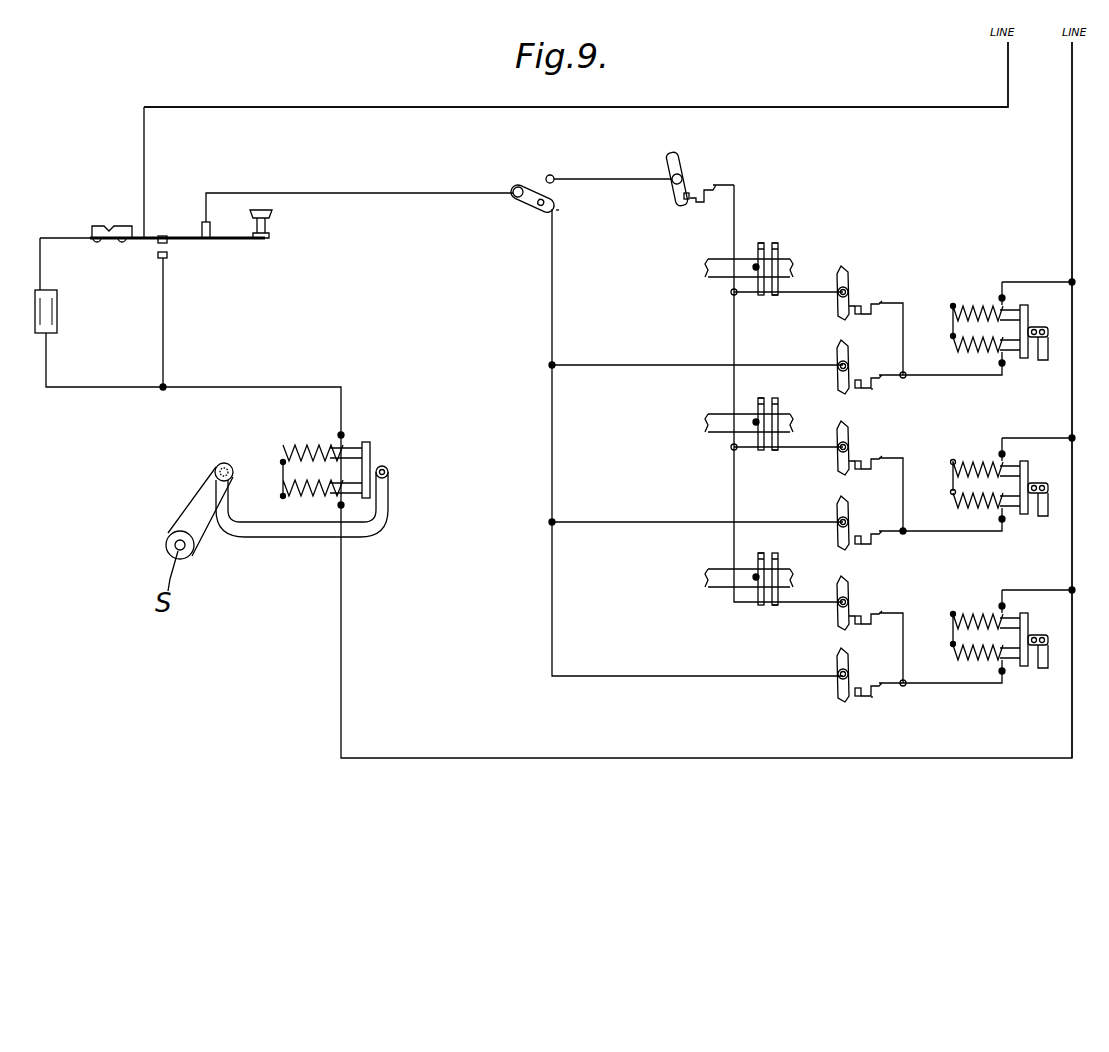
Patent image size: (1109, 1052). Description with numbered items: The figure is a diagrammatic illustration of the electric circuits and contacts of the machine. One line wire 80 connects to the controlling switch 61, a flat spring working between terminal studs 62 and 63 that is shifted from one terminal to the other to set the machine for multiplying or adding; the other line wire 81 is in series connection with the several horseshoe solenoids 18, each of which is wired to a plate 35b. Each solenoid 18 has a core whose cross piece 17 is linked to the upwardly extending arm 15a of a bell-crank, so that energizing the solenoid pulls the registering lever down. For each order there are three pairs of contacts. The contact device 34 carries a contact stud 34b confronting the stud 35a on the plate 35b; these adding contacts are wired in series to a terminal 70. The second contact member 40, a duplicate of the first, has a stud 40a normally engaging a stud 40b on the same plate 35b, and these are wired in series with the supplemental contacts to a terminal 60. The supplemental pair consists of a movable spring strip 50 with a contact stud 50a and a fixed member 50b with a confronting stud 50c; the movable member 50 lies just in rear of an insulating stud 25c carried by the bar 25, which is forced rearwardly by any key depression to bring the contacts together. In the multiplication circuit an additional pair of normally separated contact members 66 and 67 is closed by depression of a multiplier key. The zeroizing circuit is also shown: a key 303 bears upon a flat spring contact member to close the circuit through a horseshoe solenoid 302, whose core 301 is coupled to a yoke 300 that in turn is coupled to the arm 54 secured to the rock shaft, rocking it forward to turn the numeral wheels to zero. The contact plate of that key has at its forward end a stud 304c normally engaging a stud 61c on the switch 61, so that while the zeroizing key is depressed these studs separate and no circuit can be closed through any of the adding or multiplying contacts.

The upwardly extending arm of bell-crank lever 15a is at (1043, 683).
The cross piece of solenoid core 17 is at (1042, 614).
The horseshoe solenoid 18 is at (974, 586).
The bar 25 is at (738, 423).
The stud of insulating material 25c is at (755, 549).
The contact device 34 is at (820, 700).
The contact stud 34b is at (848, 727).
The contact stud 35a is at (894, 722).
The plate 35b is at (898, 702).
The second contact member 40 is at (824, 632).
The contact stud 40a is at (855, 306).
The contact stud 40b is at (870, 304).
The movable contact member 50 is at (760, 622).
The contact stud 50a is at (762, 242).
The fixed contact member 50b is at (778, 290).
The contact stud 50c is at (776, 242).
The arm 54 is at (190, 507).
The terminal 60 is at (546, 178).
The switch 61 is at (523, 203).
The contact stud 61c is at (210, 222).
The terminal stud 62 is at (157, 258).
The terminal stud 63 is at (163, 233).
The contact member 66 is at (686, 168).
The contact member 67 is at (692, 203).
The terminal 70 is at (560, 206).
The line wire 80 is at (748, 107).
The line wire 81 is at (1073, 180).
The yoke 300 is at (290, 538).
The core 301 is at (366, 440).
The horseshoe solenoid 302 is at (293, 443).
The key 303 is at (276, 216).
The contact stud 304c is at (262, 240).